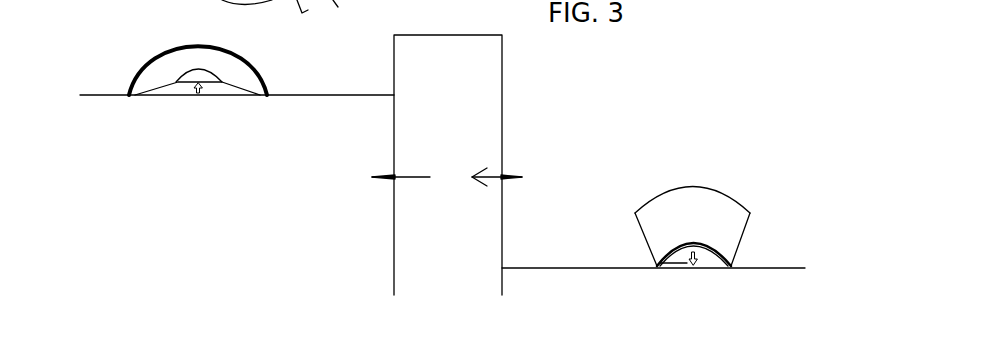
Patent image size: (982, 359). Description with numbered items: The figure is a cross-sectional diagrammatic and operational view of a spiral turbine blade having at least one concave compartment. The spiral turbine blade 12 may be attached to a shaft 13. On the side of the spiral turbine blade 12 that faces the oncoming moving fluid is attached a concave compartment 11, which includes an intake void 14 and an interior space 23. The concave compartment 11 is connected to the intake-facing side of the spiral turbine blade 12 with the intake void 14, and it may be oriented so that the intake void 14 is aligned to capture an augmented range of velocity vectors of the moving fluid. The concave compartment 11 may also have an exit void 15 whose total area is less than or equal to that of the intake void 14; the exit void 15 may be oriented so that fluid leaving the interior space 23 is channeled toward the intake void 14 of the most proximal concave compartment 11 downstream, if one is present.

The concave compartment 11 is at (160, 72).
The spiral turbine blade 12 is at (103, 87).
The shaft 13 is at (438, 237).
The intake void 14 is at (210, 89).
The exit void 15 is at (657, 267).
The interior space 23 is at (178, 72).